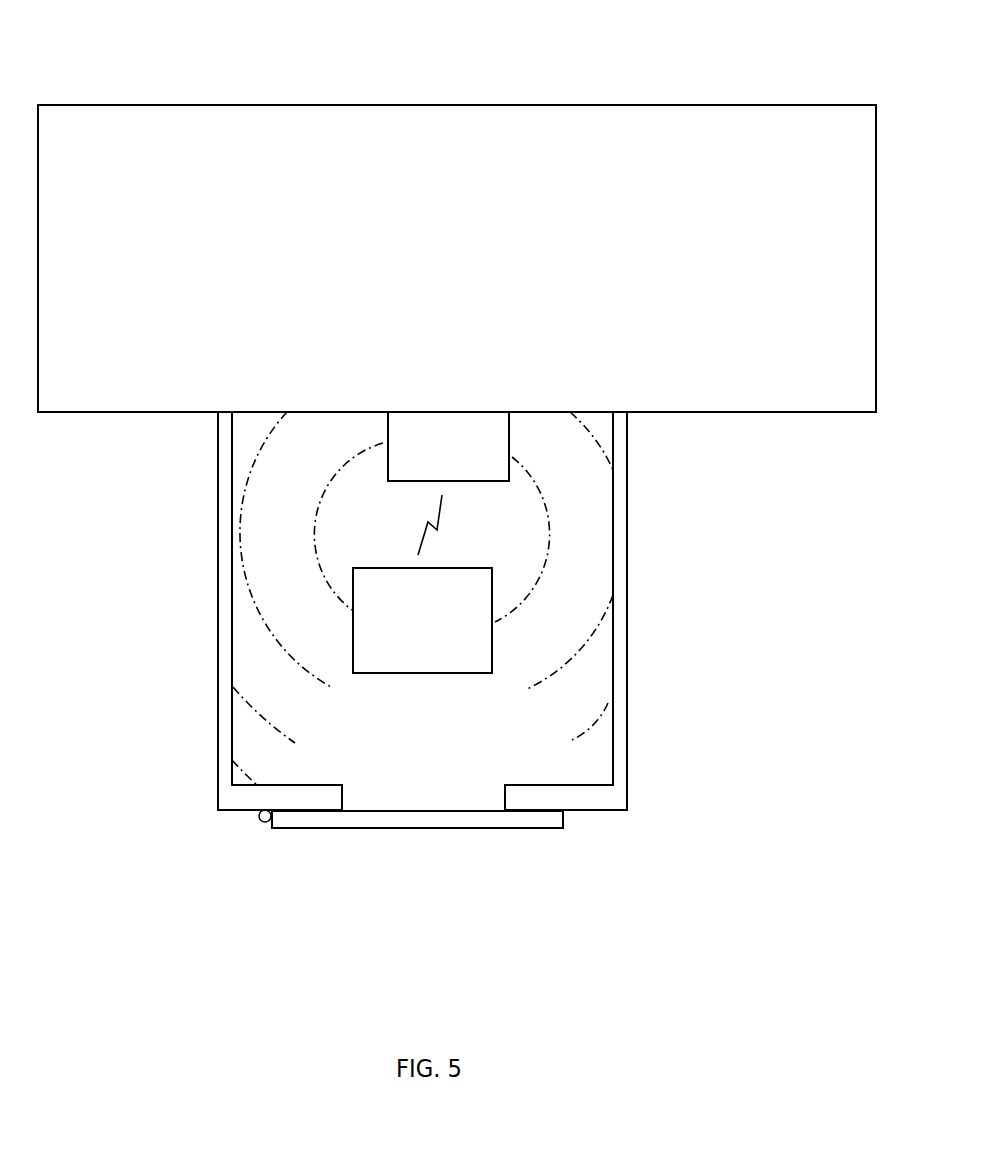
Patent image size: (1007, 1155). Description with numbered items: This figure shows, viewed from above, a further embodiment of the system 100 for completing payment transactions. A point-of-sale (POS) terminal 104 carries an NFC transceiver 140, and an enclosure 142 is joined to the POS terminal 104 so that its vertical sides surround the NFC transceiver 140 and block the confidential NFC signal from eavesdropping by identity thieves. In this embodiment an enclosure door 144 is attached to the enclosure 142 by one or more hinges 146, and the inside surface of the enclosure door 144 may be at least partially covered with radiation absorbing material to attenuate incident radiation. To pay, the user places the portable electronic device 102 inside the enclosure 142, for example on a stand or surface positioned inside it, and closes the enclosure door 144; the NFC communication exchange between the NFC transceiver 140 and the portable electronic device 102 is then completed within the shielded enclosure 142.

The system 100 is at (154, 53).
The portable electronic device 102 is at (425, 674).
The point-of-sale (POS) terminal 104 is at (663, 104).
The NFC transceiver 140 is at (464, 411).
The enclosure 142 is at (217, 532).
The enclosure door 144 is at (437, 829).
The hinge 146 is at (260, 823).